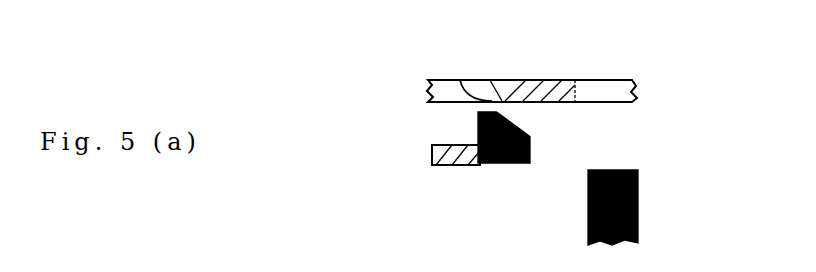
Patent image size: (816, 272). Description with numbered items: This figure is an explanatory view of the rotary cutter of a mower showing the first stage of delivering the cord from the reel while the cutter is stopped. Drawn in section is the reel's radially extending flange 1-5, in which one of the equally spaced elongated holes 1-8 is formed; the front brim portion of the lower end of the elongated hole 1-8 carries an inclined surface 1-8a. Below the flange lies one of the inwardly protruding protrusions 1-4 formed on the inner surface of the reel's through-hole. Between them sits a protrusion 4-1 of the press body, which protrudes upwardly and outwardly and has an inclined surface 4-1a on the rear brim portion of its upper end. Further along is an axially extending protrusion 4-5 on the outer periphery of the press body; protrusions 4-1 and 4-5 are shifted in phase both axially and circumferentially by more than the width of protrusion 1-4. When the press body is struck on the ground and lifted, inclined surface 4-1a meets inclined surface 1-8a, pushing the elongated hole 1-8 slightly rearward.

The elongated hole 1-8 is at (611, 90).
The inclined surface 1-8a is at (462, 80).
The flange 1-5 is at (528, 80).
The protrusion 1-4 is at (455, 143).
The protrusion 4-1 is at (497, 165).
The inclined surface 4-1a is at (520, 118).
The protrusion 4-5 is at (638, 198).